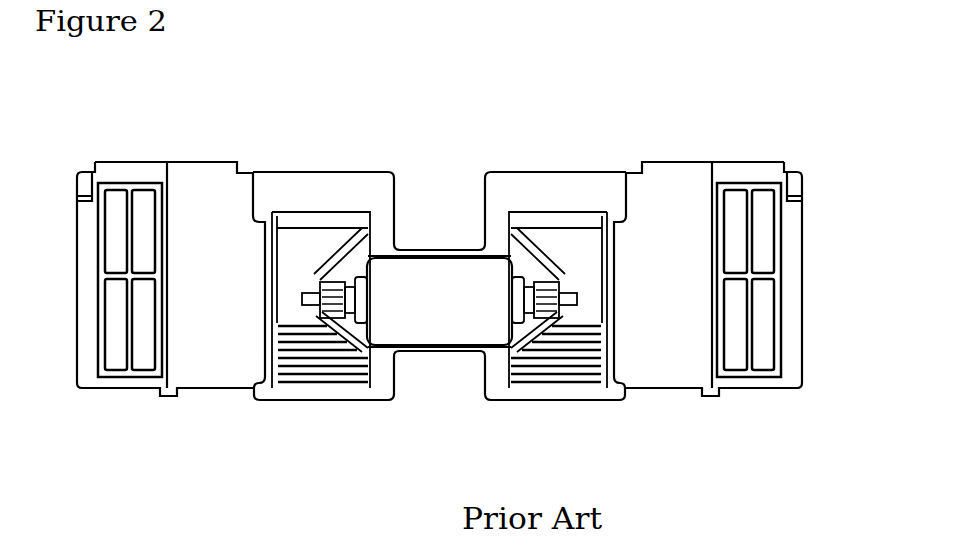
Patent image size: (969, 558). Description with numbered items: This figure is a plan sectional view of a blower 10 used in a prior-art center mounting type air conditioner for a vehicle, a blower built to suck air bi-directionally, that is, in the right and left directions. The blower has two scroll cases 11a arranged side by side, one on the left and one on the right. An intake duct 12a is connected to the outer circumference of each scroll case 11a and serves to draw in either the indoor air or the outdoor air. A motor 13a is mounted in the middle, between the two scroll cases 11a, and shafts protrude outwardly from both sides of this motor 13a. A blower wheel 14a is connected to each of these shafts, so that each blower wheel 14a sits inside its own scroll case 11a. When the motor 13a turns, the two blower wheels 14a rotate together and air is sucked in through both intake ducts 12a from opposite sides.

The blower unit (prior art) 10 is at (145, 134).
The scroll case 11a is at (305, 170).
The intake duct 12a is at (200, 372).
The motor 13a is at (442, 332).
The blower wheel 14a is at (315, 372).